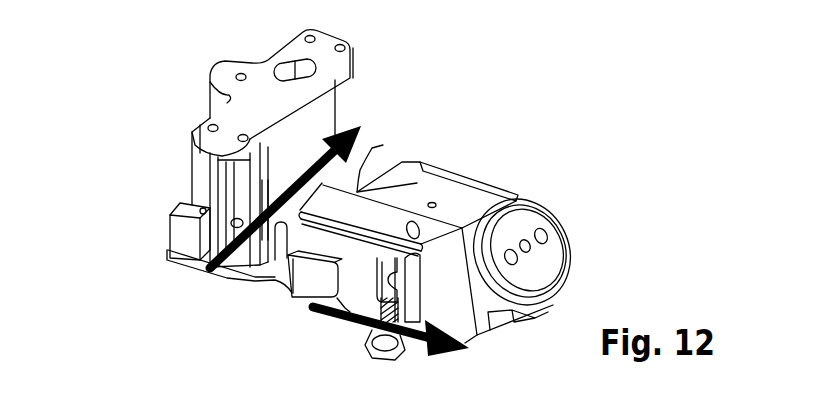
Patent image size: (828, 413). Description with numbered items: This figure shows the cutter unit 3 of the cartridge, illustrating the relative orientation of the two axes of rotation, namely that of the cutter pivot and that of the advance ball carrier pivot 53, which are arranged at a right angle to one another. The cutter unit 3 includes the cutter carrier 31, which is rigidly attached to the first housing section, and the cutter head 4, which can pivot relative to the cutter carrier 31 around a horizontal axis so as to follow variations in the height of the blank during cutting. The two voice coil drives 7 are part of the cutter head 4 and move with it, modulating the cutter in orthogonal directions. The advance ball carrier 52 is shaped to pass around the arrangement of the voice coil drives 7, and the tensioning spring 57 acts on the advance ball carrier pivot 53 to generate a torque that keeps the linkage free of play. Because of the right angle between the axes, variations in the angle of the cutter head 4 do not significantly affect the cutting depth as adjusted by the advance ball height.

The cutter unit 3 is at (137, 62).
The cutter carrier 31 is at (241, 72).
The cutter head 4 is at (503, 158).
The voice coil drives 7 is at (385, 170).
The advance ball carrier 52 is at (363, 323).
The advance ball carrier pivot 53 is at (323, 315).
The tensioning spring 57 is at (389, 333).